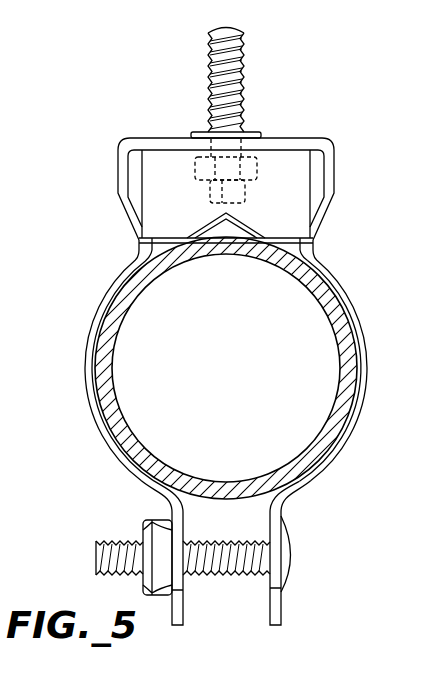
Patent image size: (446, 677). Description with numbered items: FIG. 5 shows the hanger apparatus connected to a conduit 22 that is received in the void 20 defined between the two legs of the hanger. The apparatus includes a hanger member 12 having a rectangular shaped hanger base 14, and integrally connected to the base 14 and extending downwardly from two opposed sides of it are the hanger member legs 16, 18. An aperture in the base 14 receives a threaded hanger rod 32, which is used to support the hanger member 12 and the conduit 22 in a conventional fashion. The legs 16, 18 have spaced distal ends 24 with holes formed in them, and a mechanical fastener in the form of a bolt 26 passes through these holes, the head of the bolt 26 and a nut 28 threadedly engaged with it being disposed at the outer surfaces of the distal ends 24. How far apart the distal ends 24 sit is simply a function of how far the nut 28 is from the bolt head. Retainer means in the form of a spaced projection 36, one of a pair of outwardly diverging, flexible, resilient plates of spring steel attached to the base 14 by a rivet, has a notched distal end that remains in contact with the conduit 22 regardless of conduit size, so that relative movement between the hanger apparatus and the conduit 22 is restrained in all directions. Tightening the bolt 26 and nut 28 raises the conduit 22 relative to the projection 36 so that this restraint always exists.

The hanger member 12 is at (345, 283).
The hanger base 14 is at (280, 137).
The hanger member leg 16 is at (175, 517).
The hanger member leg 18 is at (278, 615).
The void 20 is at (350, 312).
The conduit 22 is at (113, 370).
The hanger member legs distal ends 24 is at (182, 598).
The bolt 26 is at (98, 562).
The nut 28 is at (152, 578).
The threaded hanger rod 32 is at (233, 63).
The projection 36 is at (152, 222).